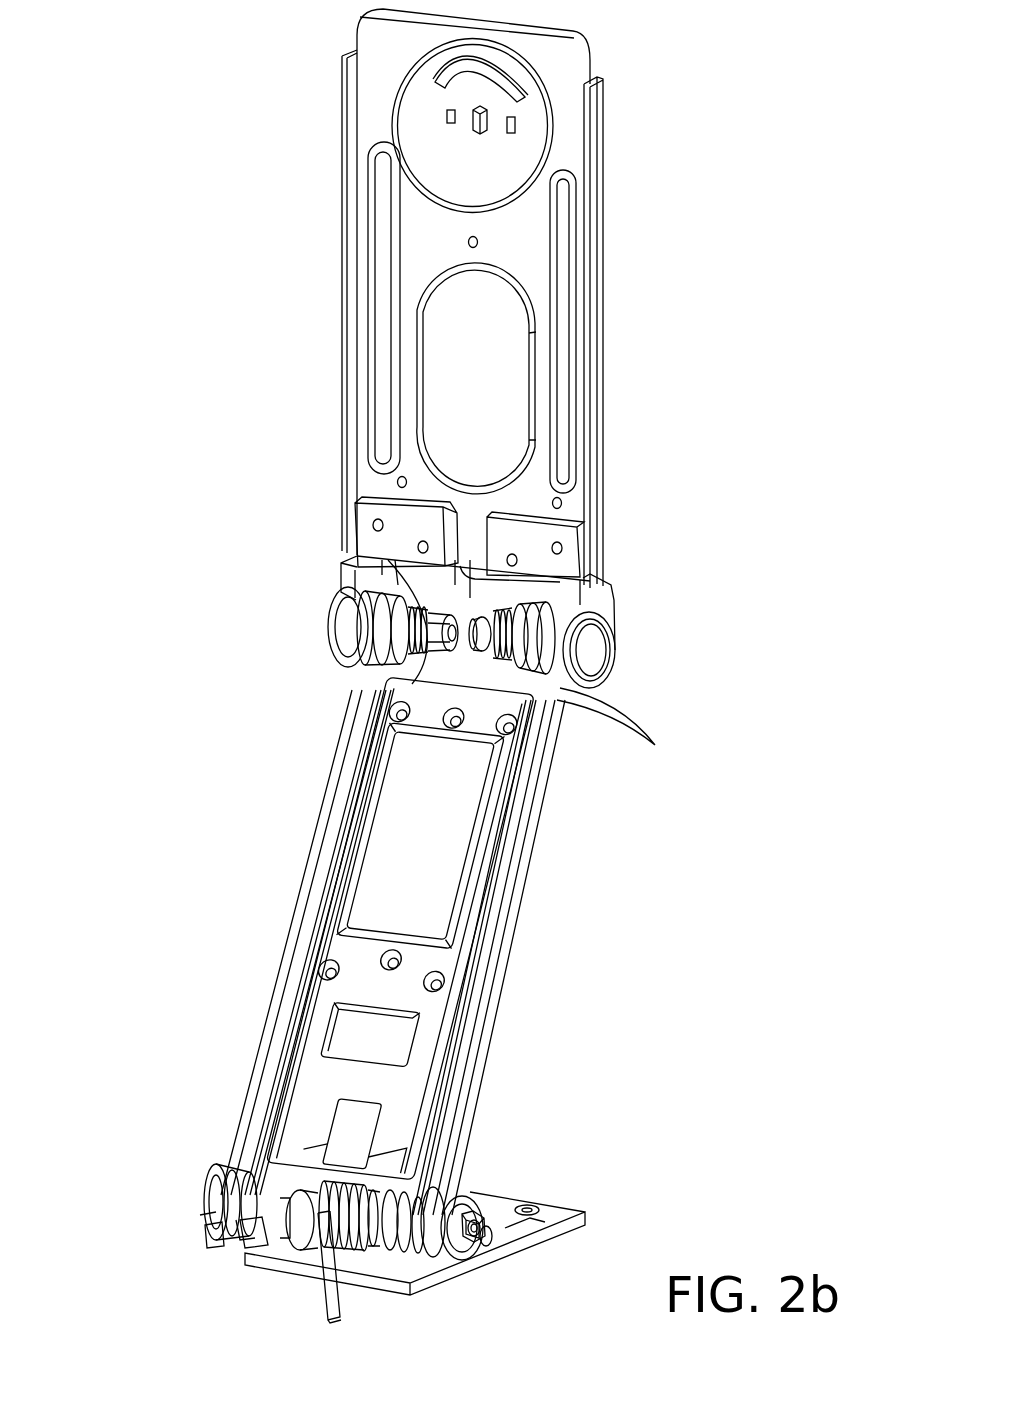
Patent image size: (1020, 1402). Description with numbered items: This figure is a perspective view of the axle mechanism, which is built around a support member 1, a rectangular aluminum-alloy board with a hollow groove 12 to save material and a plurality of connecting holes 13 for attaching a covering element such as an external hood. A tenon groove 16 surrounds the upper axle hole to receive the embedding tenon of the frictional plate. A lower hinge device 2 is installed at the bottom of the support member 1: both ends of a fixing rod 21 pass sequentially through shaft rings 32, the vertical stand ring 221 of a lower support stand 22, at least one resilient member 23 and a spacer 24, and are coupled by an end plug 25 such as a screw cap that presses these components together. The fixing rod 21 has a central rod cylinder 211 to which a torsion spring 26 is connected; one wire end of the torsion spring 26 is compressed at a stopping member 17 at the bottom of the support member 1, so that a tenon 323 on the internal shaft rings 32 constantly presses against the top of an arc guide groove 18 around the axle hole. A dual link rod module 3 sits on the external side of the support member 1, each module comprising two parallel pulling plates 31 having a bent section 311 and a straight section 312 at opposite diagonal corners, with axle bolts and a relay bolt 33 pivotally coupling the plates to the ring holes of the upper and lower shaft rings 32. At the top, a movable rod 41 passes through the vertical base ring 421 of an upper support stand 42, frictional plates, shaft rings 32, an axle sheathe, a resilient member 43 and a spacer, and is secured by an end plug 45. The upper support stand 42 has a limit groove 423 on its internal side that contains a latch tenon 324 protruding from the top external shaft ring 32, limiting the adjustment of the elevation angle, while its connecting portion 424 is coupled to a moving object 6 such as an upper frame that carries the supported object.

The support member 1 is at (345, 776).
The lower hinge device 2 is at (585, 1108).
The dual link rod module 3 is at (520, 1083).
The moving object 6 is at (576, 232).
The hollow groove 12 is at (452, 798).
The connecting holes 13 is at (447, 973).
The tenon groove 16 is at (240, 1242).
The stopping member 17 is at (345, 1135).
The arc guide groove 18 is at (373, 1253).
The fixing rod 21 is at (490, 1235).
The lower support stand 22 is at (548, 1200).
The resilient member 23 is at (460, 1257).
The spacer 24 is at (478, 1253).
The end plug 25 is at (200, 1192).
The torsion spring 26 is at (322, 1268).
The pulling plates 31 is at (345, 818).
The shaft rings 32 is at (440, 1300).
The relay bolt 33 is at (345, 665).
The movable rod 41 is at (597, 646).
The upper support stand 42 is at (573, 538).
The resilient member 43 is at (435, 690).
The end plug 45 is at (350, 560).
The rod cylinder 211 is at (287, 1262).
The stand ring 221 is at (232, 1185).
The bent section 311 is at (365, 655).
The straight section 312 is at (200, 1210).
The tenon 323 is at (387, 1255).
The latch tenon 324 is at (352, 628).
The base ring 421 is at (598, 618).
The limit groove 423 is at (335, 608).
The connecting portion 424 is at (525, 532).